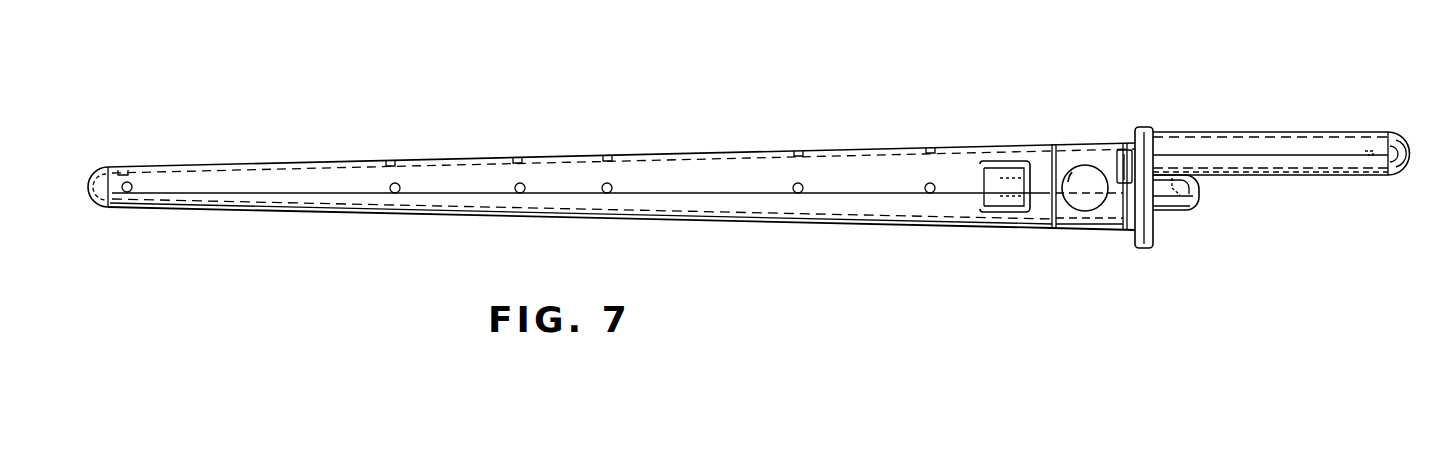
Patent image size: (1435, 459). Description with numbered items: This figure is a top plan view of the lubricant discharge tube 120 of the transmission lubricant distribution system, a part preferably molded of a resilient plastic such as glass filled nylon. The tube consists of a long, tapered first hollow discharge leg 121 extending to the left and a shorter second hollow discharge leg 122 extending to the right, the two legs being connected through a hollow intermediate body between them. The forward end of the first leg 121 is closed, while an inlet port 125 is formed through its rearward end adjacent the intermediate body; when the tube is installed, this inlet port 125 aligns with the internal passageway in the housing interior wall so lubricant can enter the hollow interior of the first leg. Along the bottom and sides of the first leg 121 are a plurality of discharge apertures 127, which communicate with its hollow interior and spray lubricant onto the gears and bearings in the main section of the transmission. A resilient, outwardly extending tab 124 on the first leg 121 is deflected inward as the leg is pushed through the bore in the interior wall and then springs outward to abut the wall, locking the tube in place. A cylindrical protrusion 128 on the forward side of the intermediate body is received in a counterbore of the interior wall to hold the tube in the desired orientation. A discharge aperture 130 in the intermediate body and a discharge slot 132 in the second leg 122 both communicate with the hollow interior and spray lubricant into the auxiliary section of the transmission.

The lubricant discharge tube 120 is at (543, 108).
The first hollow discharge leg 121 is at (708, 180).
The second hollow discharge leg 122 is at (1258, 143).
The resilient outwardly extending tab 124 is at (1012, 210).
The inlet port 125 is at (1085, 168).
The discharge apertures 127 is at (400, 185).
The cylindrical protrusion 128 is at (1119, 150).
The discharge aperture 130 is at (1203, 190).
The discharge slot 132 is at (1400, 132).